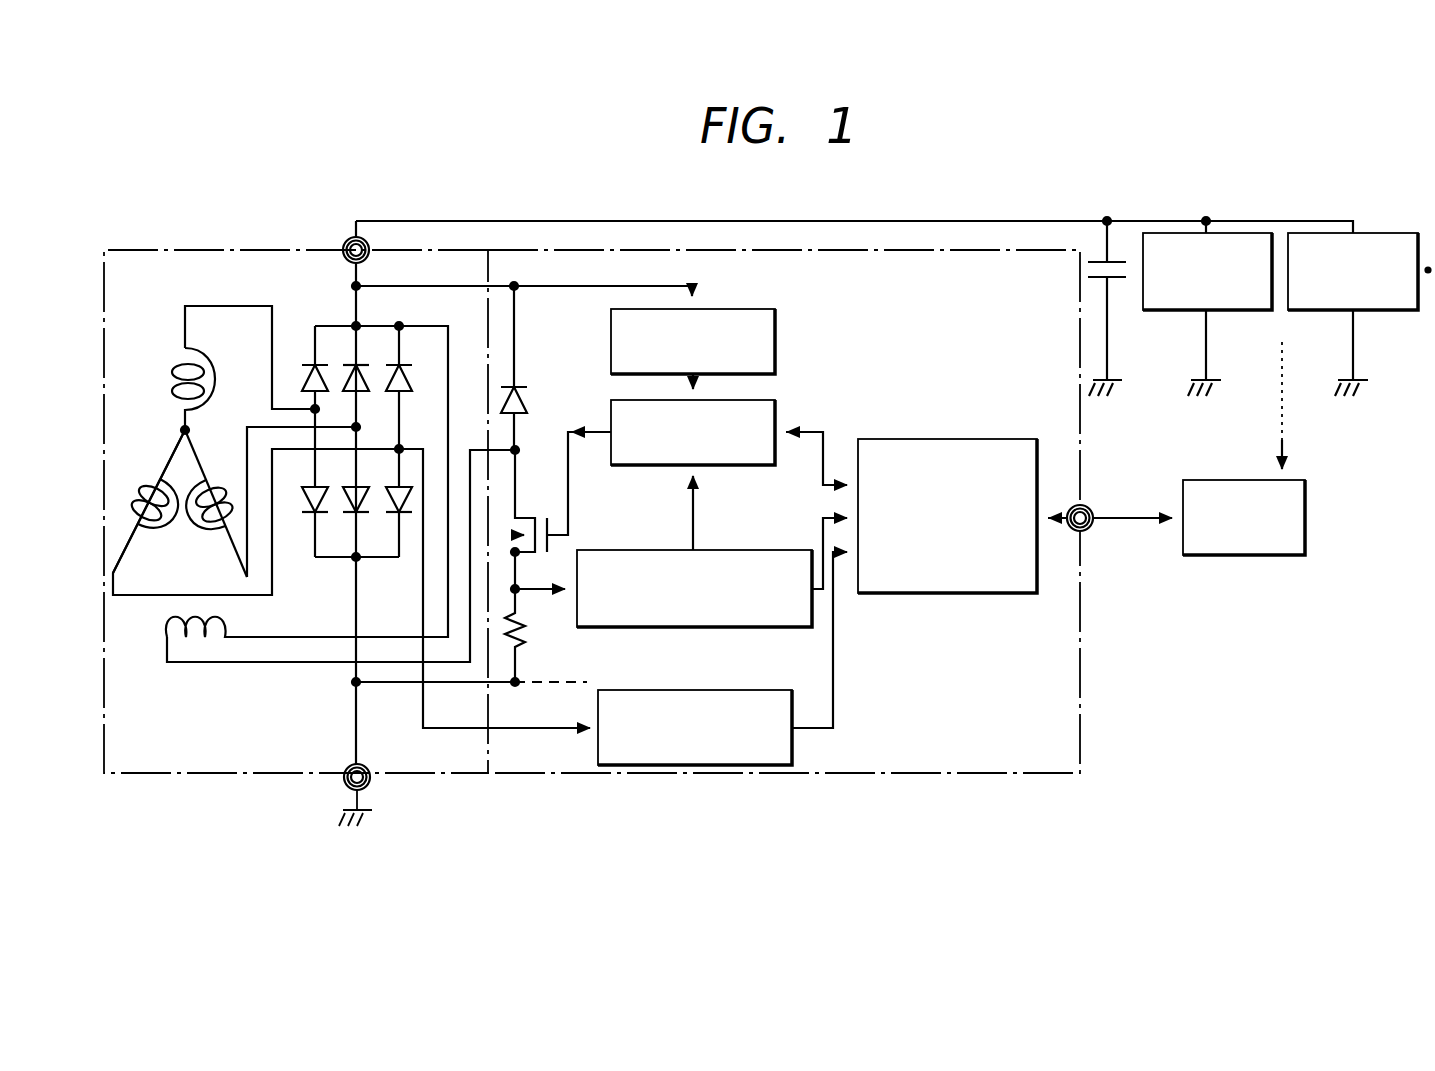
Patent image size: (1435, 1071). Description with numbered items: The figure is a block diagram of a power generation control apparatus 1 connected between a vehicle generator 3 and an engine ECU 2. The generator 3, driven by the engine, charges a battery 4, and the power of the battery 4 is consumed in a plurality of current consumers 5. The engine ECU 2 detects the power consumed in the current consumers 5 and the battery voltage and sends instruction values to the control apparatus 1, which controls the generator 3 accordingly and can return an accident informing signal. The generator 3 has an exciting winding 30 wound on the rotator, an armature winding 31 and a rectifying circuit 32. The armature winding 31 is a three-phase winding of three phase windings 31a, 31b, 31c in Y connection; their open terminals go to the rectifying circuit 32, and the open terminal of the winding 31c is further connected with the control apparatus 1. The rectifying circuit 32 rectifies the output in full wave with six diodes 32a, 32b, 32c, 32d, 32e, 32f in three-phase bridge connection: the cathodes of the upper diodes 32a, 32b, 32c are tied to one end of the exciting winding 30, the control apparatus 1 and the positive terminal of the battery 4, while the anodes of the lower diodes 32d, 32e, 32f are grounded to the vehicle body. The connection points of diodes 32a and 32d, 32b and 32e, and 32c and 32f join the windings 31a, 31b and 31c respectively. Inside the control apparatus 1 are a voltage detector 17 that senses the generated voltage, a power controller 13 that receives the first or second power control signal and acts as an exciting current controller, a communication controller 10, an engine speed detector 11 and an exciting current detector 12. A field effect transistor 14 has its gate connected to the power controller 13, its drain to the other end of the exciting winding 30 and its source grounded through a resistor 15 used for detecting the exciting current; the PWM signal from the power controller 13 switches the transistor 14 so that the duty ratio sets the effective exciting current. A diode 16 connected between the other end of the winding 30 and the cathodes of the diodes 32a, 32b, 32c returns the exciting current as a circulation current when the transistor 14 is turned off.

The power generation control apparatus 1 is at (1086, 694).
The engine electronic control unit 2 is at (1193, 478).
The generator 3 is at (222, 243).
The battery 4 is at (1115, 280).
The current consumers 5 is at (1247, 233).
The communication controller 10 is at (992, 439).
The engine speed detector 11 is at (748, 690).
The exciting current detector 12 is at (750, 548).
The power controller 13 is at (772, 398).
The field effect transistor 14 is at (522, 514).
The resistor 15 is at (527, 639).
The diode 16 is at (527, 405).
The voltage detector 17 is at (760, 305).
The exciting winding 30 is at (160, 640).
The armature winding 31 is at (180, 429).
The phase winding 31a is at (213, 378).
The phase winding 31b is at (198, 510).
The phase winding 31c is at (131, 488).
The rectifying circuit 32 is at (377, 447).
The diode 32a is at (300, 378).
The diode 32b is at (372, 380).
The diode 32c is at (415, 380).
The diode 32d is at (300, 497).
The diode 32e is at (350, 493).
The diode 32f is at (393, 495).